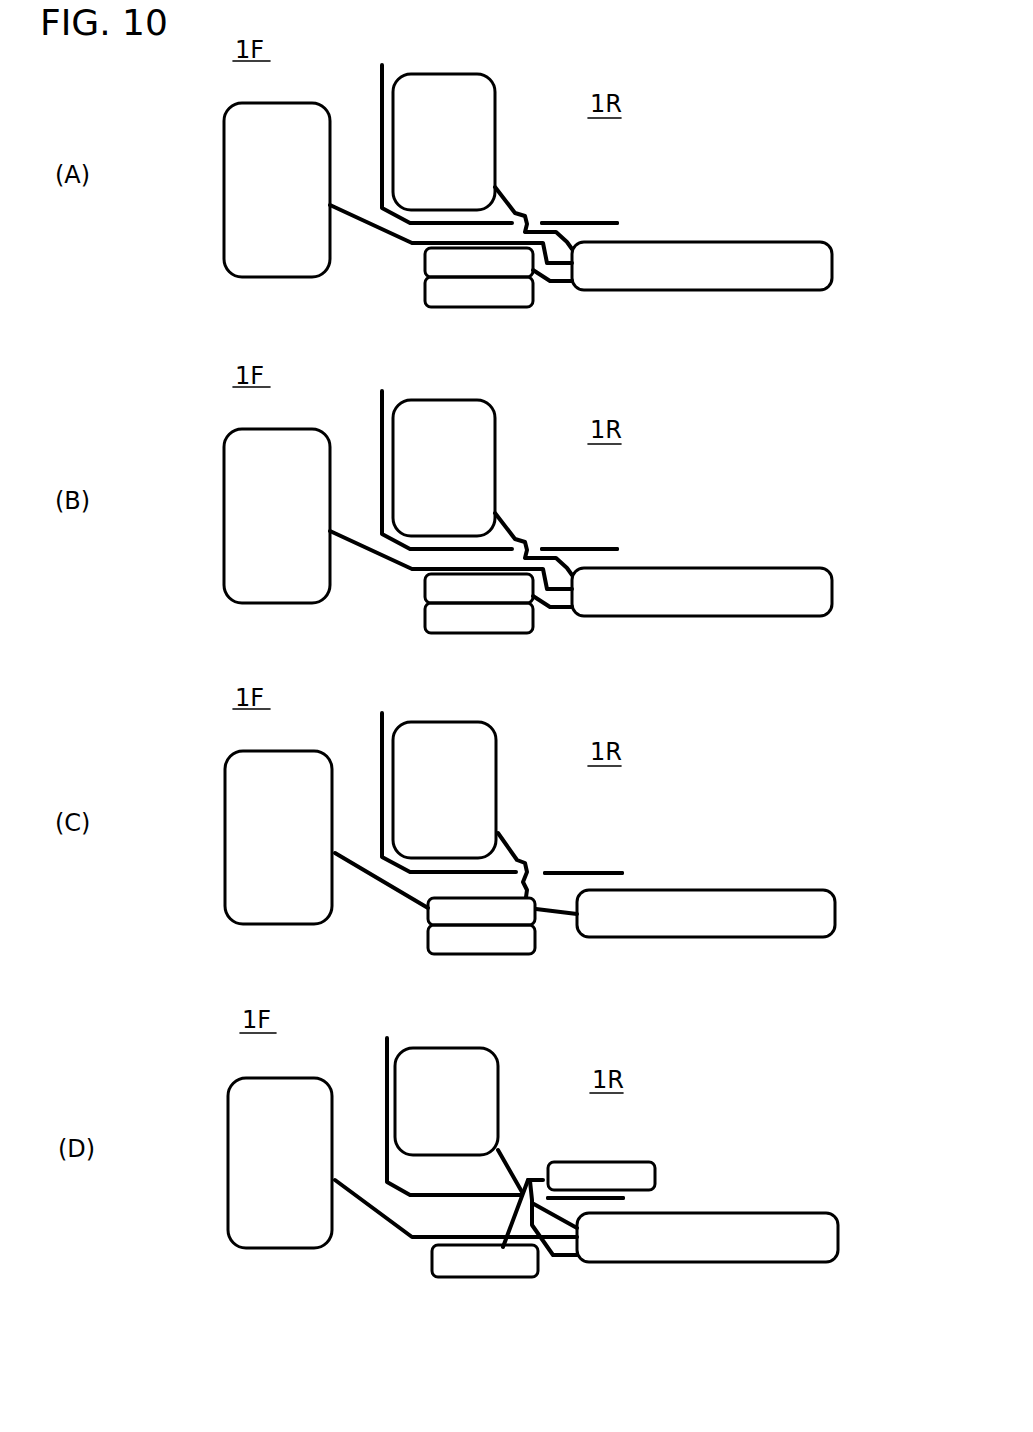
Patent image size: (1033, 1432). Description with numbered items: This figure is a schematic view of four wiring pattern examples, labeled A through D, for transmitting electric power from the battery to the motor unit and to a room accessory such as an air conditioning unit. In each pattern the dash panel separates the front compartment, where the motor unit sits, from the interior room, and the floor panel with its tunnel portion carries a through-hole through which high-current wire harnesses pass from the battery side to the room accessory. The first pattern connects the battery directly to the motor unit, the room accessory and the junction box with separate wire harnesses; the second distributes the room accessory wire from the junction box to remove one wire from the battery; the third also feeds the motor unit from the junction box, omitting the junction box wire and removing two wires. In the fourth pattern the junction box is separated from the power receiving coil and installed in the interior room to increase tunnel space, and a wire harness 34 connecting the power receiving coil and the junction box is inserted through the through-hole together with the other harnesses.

The wire harness 34 is at (517, 1221).